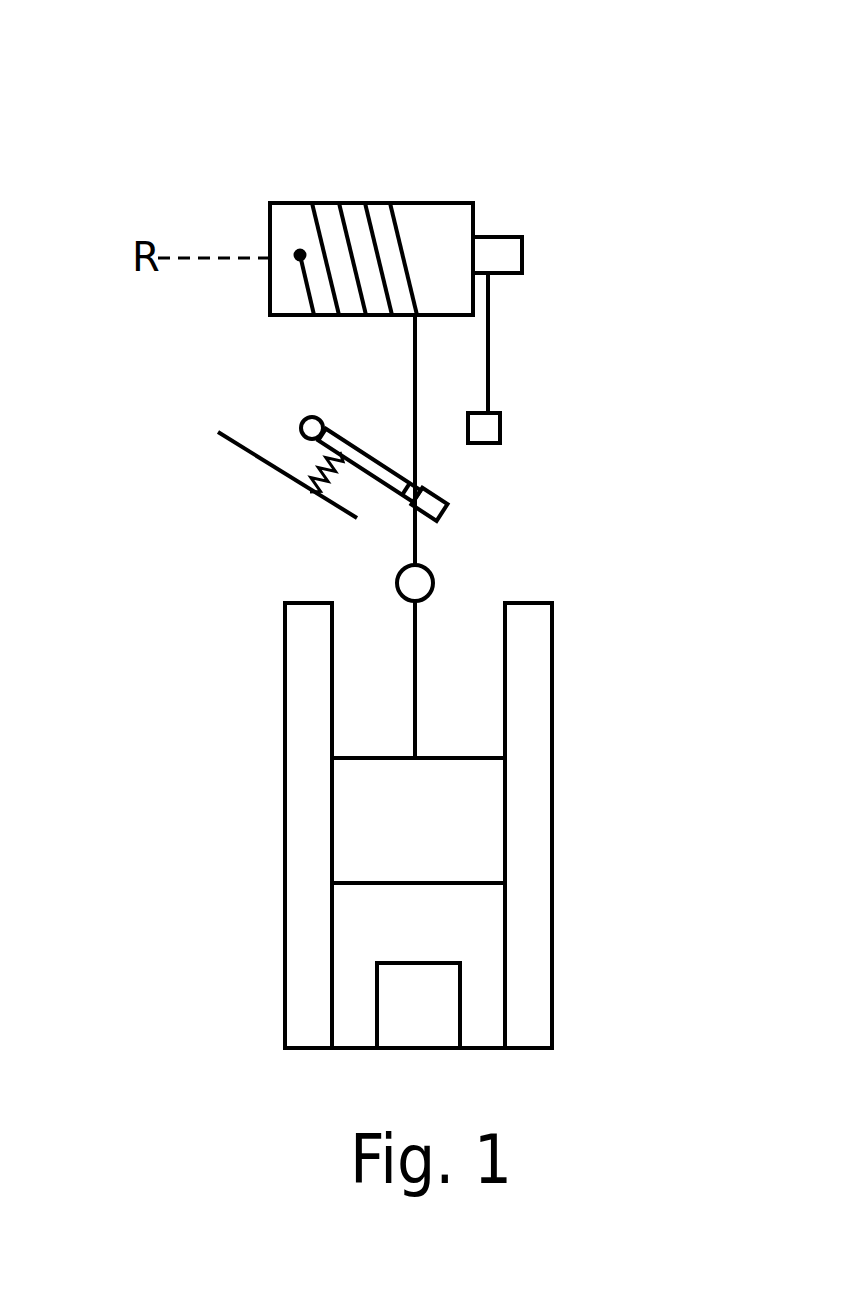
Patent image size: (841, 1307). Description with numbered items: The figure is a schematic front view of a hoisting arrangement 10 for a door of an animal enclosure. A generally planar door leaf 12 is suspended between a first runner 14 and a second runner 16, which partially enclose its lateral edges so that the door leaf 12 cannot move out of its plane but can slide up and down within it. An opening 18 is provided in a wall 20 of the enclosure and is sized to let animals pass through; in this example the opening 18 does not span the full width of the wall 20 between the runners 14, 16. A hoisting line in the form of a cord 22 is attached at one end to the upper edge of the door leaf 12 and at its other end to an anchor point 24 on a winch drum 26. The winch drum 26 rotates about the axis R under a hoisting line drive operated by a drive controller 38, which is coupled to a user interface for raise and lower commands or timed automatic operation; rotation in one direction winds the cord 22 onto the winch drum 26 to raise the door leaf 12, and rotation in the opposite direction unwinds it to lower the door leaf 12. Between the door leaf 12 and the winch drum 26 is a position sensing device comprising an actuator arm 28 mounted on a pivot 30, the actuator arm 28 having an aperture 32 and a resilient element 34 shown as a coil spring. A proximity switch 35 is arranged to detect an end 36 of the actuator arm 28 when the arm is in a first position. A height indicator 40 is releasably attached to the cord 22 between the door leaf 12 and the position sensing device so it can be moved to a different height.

The hoisting arrangement 10 is at (645, 121).
The door leaf 12 is at (388, 780).
The first runner 14 is at (298, 817).
The second runner 16 is at (532, 832).
The opening 18 is at (437, 1013).
The wall 20 is at (358, 990).
The cord 22 is at (420, 710).
The anchor point 24 is at (300, 255).
The winch drum 26 is at (418, 222).
The actuator arm 28 is at (340, 442).
The pivot 30 is at (303, 417).
The aperture 32 is at (420, 477).
The resilient element 34 is at (310, 482).
The proximity switch 35 is at (488, 427).
The end of the actuator arm 36 is at (453, 502).
The drive controller 38 is at (522, 257).
The height indicator 40 is at (433, 580).